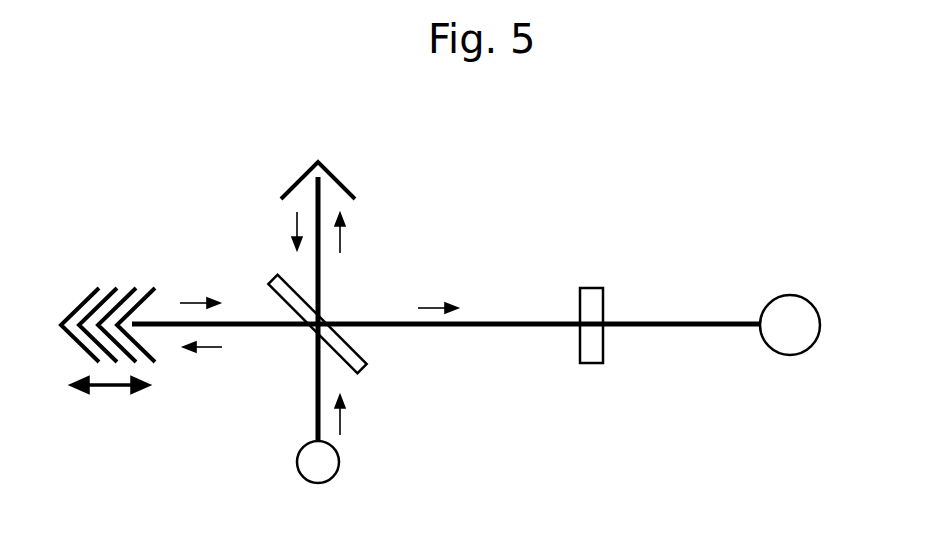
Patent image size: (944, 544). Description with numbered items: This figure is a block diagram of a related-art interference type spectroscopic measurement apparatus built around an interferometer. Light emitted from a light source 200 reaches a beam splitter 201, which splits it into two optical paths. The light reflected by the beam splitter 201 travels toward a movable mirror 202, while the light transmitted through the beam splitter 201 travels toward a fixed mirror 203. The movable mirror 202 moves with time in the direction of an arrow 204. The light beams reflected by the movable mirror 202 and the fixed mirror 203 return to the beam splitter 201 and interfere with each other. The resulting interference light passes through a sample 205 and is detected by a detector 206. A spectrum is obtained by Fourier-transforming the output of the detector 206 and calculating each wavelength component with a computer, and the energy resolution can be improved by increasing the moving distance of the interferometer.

The light source 200 is at (337, 472).
The beam splitter 201 is at (367, 372).
The movable mirror 202 is at (93, 292).
The fixed mirror 203 is at (340, 182).
The arrow 204 is at (108, 387).
The sample 205 is at (592, 283).
The detector 206 is at (808, 298).